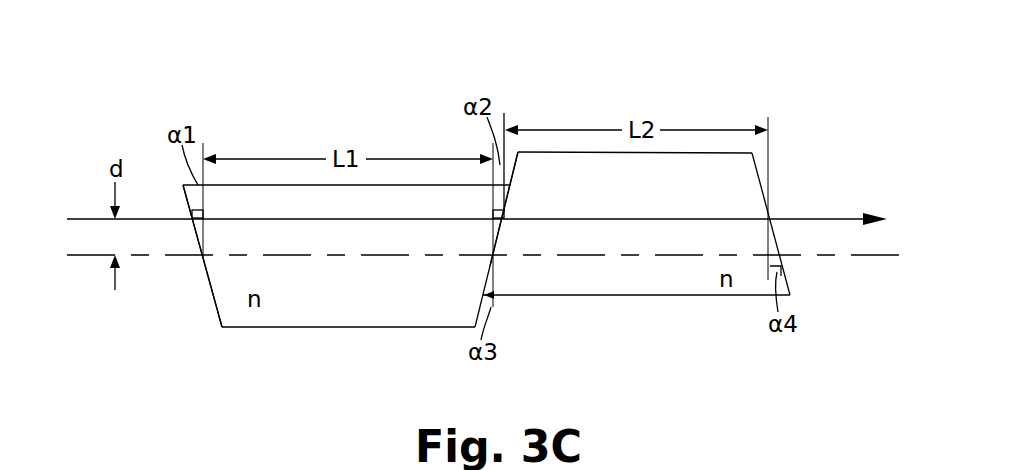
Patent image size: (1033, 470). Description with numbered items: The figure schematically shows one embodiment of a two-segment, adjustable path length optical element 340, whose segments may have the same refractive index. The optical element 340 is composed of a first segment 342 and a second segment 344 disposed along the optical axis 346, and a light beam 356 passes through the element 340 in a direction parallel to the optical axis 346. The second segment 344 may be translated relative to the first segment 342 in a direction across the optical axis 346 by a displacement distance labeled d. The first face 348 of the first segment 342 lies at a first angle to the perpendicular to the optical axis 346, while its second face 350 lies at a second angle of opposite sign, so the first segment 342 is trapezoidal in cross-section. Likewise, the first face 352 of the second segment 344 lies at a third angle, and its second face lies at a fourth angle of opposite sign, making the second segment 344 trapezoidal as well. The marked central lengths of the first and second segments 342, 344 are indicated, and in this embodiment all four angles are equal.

The optical element 340 is at (803, 112).
The first segment 342 is at (330, 328).
The second segment 344 is at (650, 296).
The optical axis 346 is at (863, 257).
The first face 348 is at (213, 300).
The second face 350 is at (475, 313).
The first face 352 is at (519, 171).
The light beam 356 is at (847, 218).